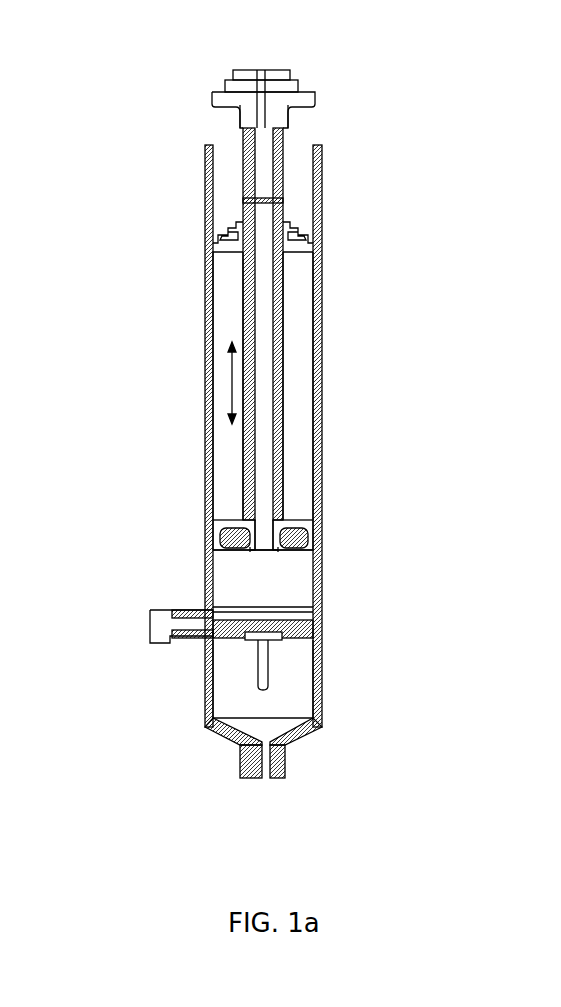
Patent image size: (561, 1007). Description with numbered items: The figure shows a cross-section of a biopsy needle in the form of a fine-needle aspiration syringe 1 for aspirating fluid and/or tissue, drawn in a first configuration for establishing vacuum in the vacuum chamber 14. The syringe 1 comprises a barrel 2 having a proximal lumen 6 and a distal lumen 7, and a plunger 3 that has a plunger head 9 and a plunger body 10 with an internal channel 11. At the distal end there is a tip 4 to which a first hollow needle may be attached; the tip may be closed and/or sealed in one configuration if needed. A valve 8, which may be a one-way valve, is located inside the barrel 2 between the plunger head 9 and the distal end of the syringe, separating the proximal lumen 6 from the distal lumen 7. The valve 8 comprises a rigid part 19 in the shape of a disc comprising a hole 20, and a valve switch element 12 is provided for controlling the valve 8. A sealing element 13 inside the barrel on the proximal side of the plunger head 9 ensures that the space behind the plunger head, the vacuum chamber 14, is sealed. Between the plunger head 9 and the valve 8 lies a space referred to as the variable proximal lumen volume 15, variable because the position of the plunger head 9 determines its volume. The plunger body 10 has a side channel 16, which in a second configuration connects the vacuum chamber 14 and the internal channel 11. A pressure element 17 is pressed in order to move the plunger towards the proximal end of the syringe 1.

The fine-needle aspiration syringe 1 is at (98, 255).
The barrel 2 is at (208, 460).
The plunger 3 is at (282, 496).
The tip 4 is at (248, 772).
The proximal lumen 6 is at (290, 368).
The distal lumen 7 is at (284, 700).
The valve 8 is at (272, 620).
The plunger head 9 is at (230, 521).
The plunger body 10 is at (246, 306).
The internal channel 11 is at (264, 450).
The valve switch element 12 is at (152, 615).
The sealing element 13 is at (314, 247).
The vacuum chamber 14 is at (230, 437).
The variable proximal lumen volume 15 is at (242, 582).
The side channel 16 is at (284, 195).
The pressure element 17 is at (258, 76).
The rigid part 19 is at (232, 640).
The hole 20 is at (294, 628).